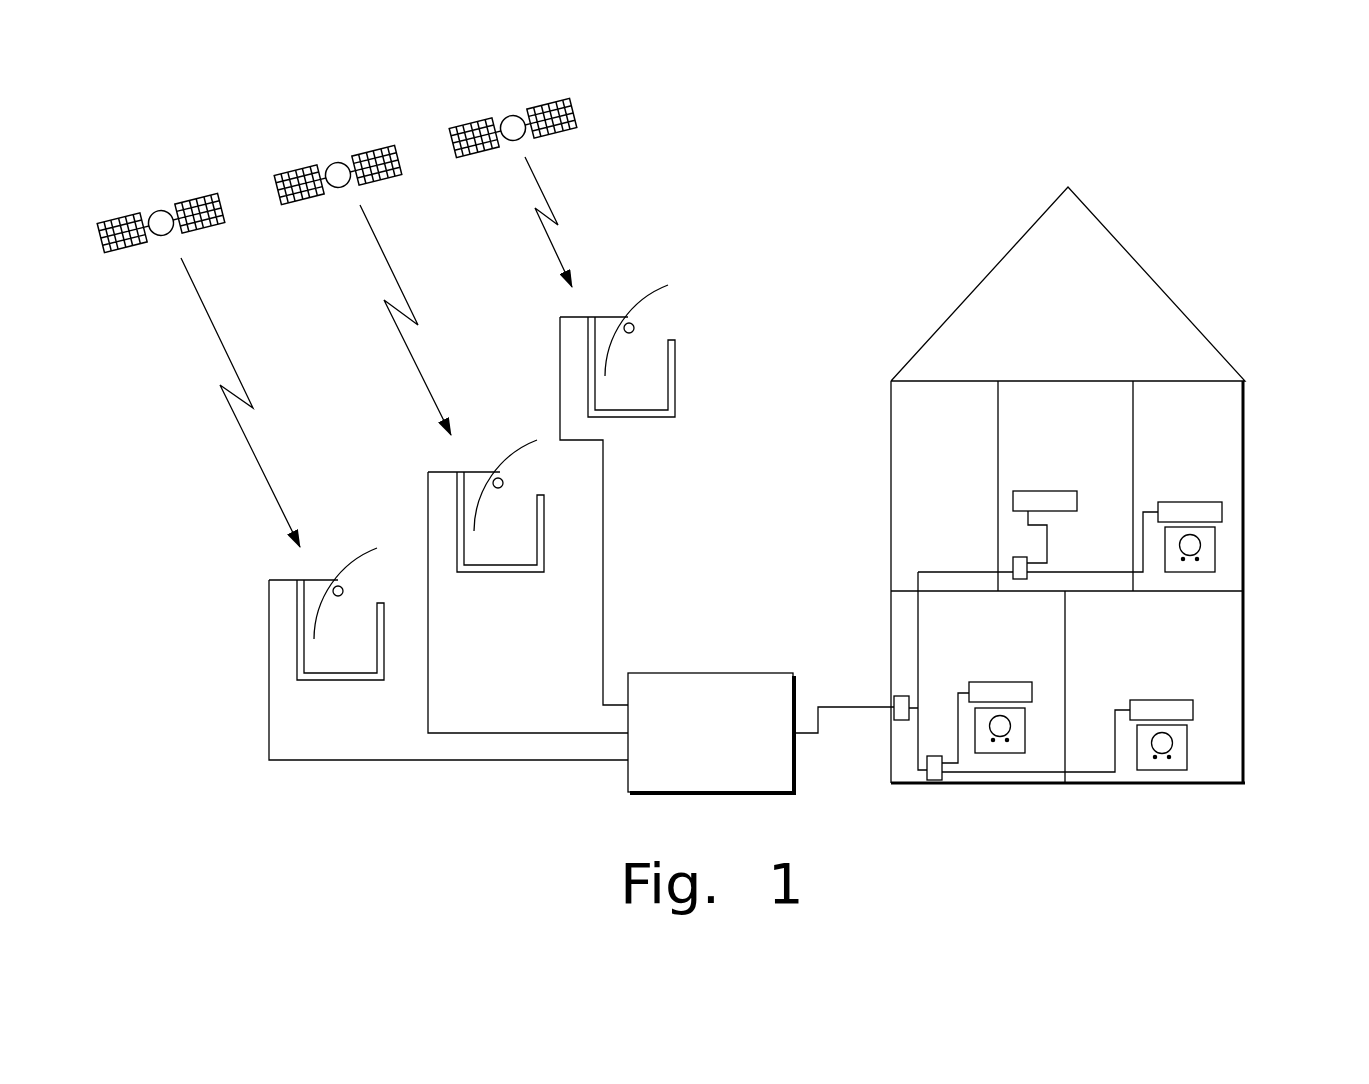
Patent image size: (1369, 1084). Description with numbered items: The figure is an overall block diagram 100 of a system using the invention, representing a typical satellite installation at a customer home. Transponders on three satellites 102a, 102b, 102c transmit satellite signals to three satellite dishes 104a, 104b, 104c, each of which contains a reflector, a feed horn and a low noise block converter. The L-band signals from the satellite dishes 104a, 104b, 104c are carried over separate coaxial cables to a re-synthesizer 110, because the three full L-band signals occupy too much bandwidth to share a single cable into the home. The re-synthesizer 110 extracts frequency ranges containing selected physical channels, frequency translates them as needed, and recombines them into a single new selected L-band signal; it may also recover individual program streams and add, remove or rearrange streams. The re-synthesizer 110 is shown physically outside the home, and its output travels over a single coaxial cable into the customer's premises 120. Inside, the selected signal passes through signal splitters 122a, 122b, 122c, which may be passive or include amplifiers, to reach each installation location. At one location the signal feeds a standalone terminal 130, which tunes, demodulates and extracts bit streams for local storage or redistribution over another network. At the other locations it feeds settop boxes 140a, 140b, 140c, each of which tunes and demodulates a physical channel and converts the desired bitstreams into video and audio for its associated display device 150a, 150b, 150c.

The overall block diagram 100 is at (1258, 194).
The satellite 102a is at (576, 117).
The satellite 102b is at (326, 164).
The satellite 102c is at (152, 210).
The satellite dish 104a is at (643, 363).
The satellite dish 104b is at (498, 527).
The satellite dish 104c is at (340, 633).
The re-synthesizer 110 is at (716, 661).
The customer's premises 120 is at (928, 273).
The signal splitter 122a is at (900, 688).
The signal splitter 122b is at (931, 795).
The signal splitter 122c is at (1006, 560).
The standalone terminal 130 is at (1040, 480).
The settop box 140a is at (997, 670).
The settop box 140b is at (1157, 690).
The settop box 140c is at (1168, 488).
The display device 150a is at (1034, 720).
The display device 150b is at (1194, 740).
The display device 150c is at (1221, 546).